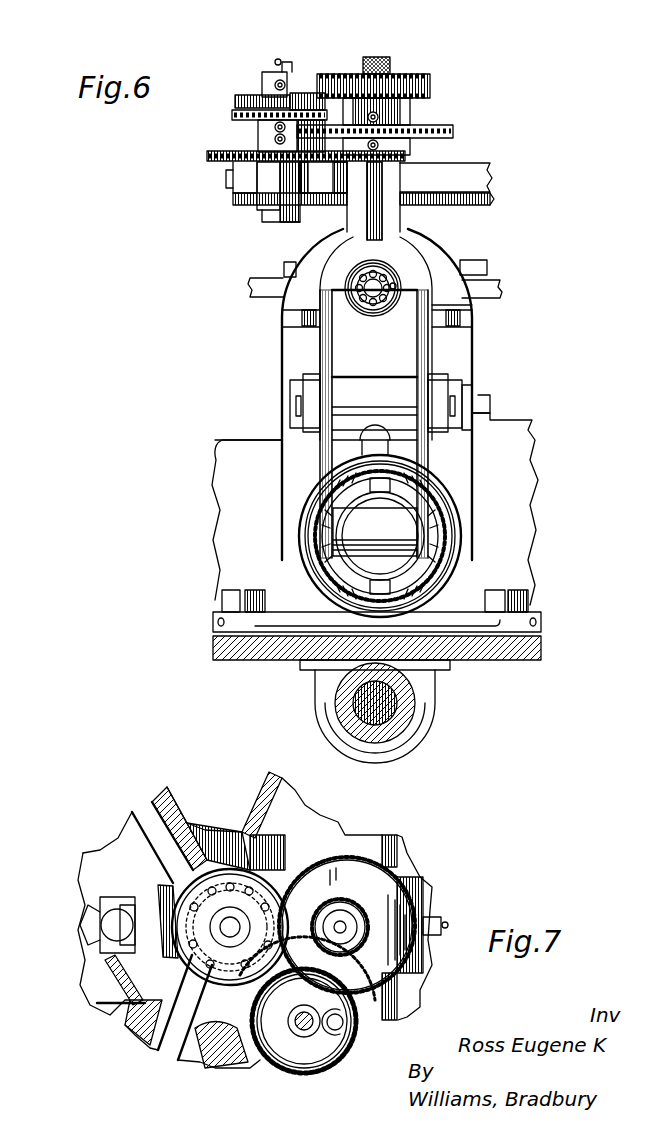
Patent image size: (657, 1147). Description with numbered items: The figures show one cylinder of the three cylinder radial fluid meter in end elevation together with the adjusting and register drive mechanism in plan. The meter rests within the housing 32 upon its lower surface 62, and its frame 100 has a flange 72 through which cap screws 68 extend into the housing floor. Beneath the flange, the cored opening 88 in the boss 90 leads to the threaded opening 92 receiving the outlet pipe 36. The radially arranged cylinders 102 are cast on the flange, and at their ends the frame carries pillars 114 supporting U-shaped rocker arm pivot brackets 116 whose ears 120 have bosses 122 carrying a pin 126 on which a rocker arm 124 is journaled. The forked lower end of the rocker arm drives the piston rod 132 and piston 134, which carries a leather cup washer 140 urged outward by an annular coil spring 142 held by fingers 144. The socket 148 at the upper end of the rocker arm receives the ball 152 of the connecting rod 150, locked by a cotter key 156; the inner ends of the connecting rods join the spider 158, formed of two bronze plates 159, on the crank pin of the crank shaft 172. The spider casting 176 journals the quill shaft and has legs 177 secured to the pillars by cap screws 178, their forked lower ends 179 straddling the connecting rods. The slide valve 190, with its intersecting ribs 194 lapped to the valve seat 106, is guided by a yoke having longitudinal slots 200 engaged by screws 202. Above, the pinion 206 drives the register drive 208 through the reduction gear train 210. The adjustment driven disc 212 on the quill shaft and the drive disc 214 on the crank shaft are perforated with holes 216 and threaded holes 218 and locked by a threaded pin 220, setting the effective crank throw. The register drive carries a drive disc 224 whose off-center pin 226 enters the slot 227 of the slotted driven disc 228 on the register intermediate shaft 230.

In FIG. 6, the housing 32 is at (550, 650).
In FIG. 6, the outlet pipe 36 is at (425, 718).
In FIG. 6, the lower surface 62 is at (240, 660).
In FIG. 6, the cap screws 68 is at (220, 602).
In FIG. 7, the cap screws 68 is at (80, 930).
In FIG. 6, the flange 72 is at (545, 618).
In FIG. 7, the flange 72 is at (80, 880).
In FIG. 6, the cored opening 88 is at (390, 700).
In FIG. 6, the boss 90 is at (425, 738).
In FIG. 6, the threaded opening 92 is at (395, 740).
In FIG. 6, the frame 100 is at (210, 480).
In FIG. 7, the frame 100 is at (130, 1055).
In FIG. 6, the cylinders 102 is at (455, 540).
In FIG. 7, the cylinders 102 is at (262, 780).
In FIG. 6, the valve seat 106 is at (525, 428).
In FIG. 6, the pillars 114 is at (450, 390).
In FIG. 6, the rocker arm pivot brackets 116 is at (318, 372).
In FIG. 6, the ears 120 is at (445, 385).
In FIG. 6, the bosses 122 is at (295, 392).
In FIG. 6, the rocker arm 124 is at (440, 380).
In FIG. 6, the pin 126 is at (476, 405).
In FIG. 6, the piston rod 132 is at (335, 525).
In FIG. 6, the piston 134 is at (335, 590).
In FIG. 6, the leather cup washer 140 is at (470, 520).
In FIG. 6, the annular coil spring 142 is at (390, 462).
In FIG. 6, the fingers 144 is at (440, 570).
In FIG. 6, the socket 148 is at (400, 285).
In FIG. 6, the connecting rod 150 is at (255, 290).
In FIG. 7, the connecting rod 150 is at (440, 917).
In FIG. 6, the ball 152 is at (350, 272).
In FIG. 6, the cotter key 156 is at (390, 306).
In FIG. 6, the spider 158 is at (470, 266).
In FIG. 6, the plates 159 is at (283, 265).
In FIG. 7, the crank shaft 172 is at (210, 905).
In FIG. 6, the spider casting 176 is at (495, 178).
In FIG. 7, the spider casting 176 is at (170, 790).
In FIG. 6, the legs 177 is at (462, 305).
In FIG. 7, the legs 177 is at (150, 830).
In FIG. 6, the cap screws 178 is at (300, 318).
In FIG. 6, the forked lower ends 179 is at (487, 275).
In FIG. 6, the slide valve 190 is at (492, 413).
In FIG. 6, the intersecting ribs 194 is at (480, 425).
In FIG. 7, the longitudinal slots 200 is at (125, 900).
In FIG. 7, the screws 202 is at (100, 925).
In FIG. 6, the pinion 206 is at (440, 120).
In FIG. 7, the pinion 206 is at (255, 895).
In FIG. 6, the register drive 208 is at (258, 126).
In FIG. 7, the register drive 208 is at (305, 1090).
In FIG. 6, the reduction gear train 210 is at (453, 130).
In FIG. 7, the reduction gear train 210 is at (388, 880).
In FIG. 6, the adjustment driven disc 212 is at (430, 80).
In FIG. 7, the adjustment driven disc 212 is at (275, 880).
In FIG. 7, the drive disc 214 is at (232, 925).
In FIG. 7, the holes 216 is at (115, 1040).
In FIG. 7, the threaded holes 218 is at (210, 963).
In FIG. 6, the threaded pin 220 is at (378, 57).
In FIG. 7, the threaded pin 220 is at (342, 905).
In FIG. 6, the drive disc 224 is at (240, 122).
In FIG. 7, the drive disc 224 is at (265, 1085).
In FIG. 6, the off-center pin 226 is at (265, 95).
In FIG. 7, the off-center pin 226 is at (352, 1020).
In FIG. 6, the slot 227 is at (300, 93).
In FIG. 7, the slot 227 is at (360, 1045).
In FIG. 6, the slotted driven disc 228 is at (300, 97).
In FIG. 7, the slotted driven disc 228 is at (290, 1080).
In FIG. 6, the register intermediate shaft 230 is at (272, 63).
In FIG. 7, the register intermediate shaft 230 is at (250, 1035).